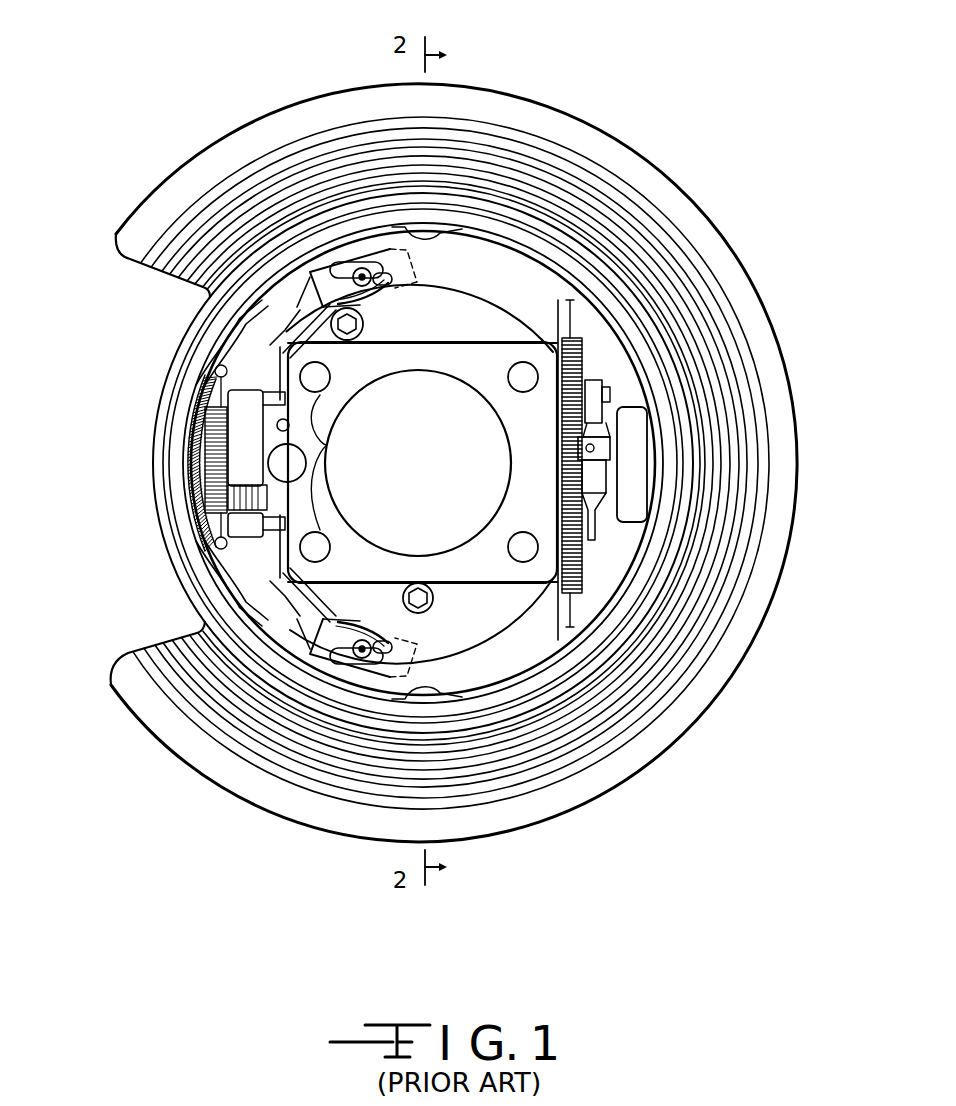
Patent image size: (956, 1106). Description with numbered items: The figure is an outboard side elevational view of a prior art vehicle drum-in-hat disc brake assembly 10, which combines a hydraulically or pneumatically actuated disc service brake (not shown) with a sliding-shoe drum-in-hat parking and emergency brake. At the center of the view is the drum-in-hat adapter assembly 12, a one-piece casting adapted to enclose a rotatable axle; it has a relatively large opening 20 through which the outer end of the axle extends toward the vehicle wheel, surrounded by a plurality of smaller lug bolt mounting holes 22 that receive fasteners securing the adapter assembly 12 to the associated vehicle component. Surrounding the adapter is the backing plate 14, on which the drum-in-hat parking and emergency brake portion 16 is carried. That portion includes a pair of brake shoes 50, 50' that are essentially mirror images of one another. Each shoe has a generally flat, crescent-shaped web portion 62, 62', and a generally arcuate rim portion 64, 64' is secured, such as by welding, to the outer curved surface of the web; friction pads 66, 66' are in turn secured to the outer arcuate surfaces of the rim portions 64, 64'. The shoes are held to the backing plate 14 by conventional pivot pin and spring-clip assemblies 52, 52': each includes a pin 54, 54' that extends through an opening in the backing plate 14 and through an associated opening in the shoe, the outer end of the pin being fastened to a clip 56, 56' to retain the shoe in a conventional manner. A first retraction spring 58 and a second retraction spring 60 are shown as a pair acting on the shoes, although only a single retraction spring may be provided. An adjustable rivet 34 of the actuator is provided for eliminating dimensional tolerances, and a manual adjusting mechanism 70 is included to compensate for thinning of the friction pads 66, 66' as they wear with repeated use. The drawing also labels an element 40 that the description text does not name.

The vehicle drum-in-hat disc brake assembly 10 is at (188, 126).
The drum-in-hat adapter assembly 12 is at (545, 258).
The backing plate 14 is at (592, 135).
The drum-in-hat parking and emergency brake portion 16 is at (595, 369).
The opening 20 is at (497, 418).
The lug bolt mounting holes 22 is at (330, 445).
The adjustable rivet 34 is at (622, 445).
The adjuster strut 40 is at (622, 490).
The brake shoe 50 is at (469, 424).
The brake shoe 50' is at (582, 683).
The pivot pin and spring-clip assembly 52 is at (313, 180).
The pivot pin and spring-clip assembly 52' is at (287, 721).
The pin 54 is at (309, 161).
The pin 54' is at (347, 769).
The clip 56 is at (342, 159).
The clip 56' is at (323, 744).
The first retraction spring 58 is at (598, 598).
The second retraction spring 60 is at (203, 452).
The web portion 62 is at (422, 171).
The web portion 62' is at (476, 704).
The rim portion 64 is at (321, 173).
The rim portion 64' is at (403, 730).
The friction pad 66 is at (460, 393).
The friction pad 66' is at (564, 505).
The manual adjusting mechanism 70 is at (243, 413).